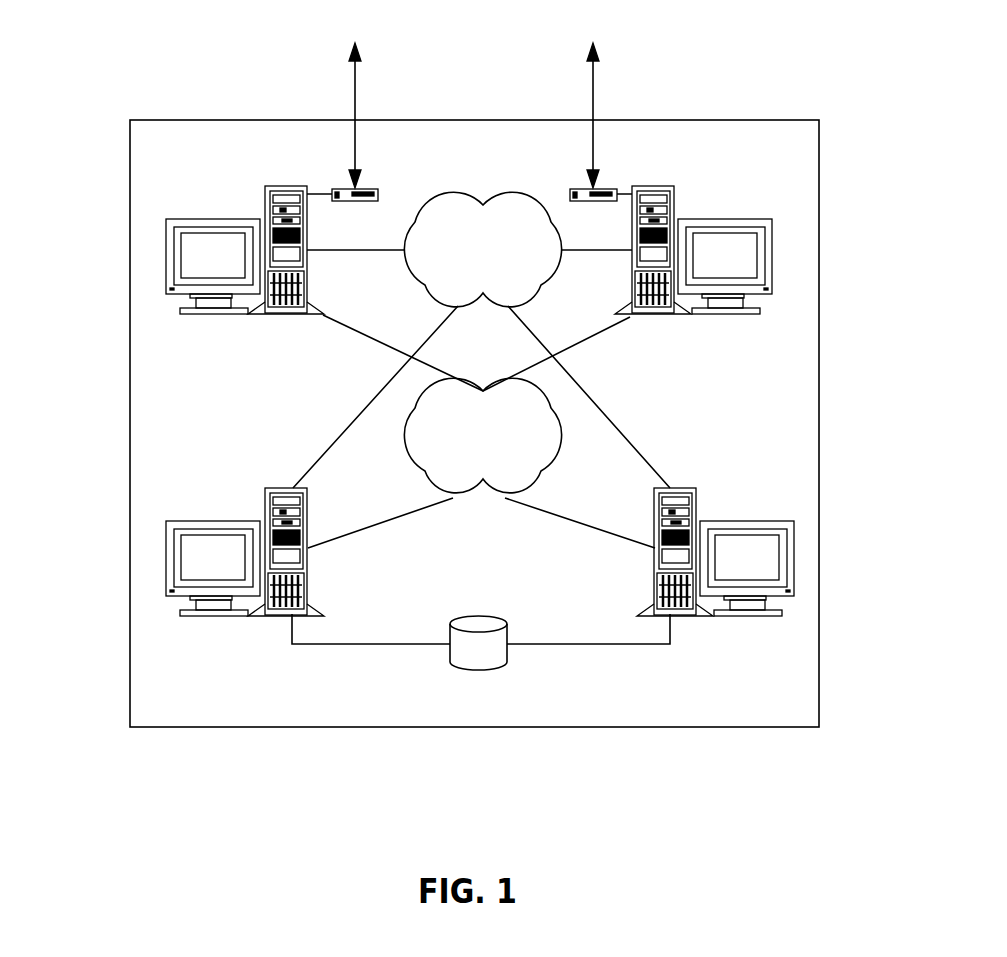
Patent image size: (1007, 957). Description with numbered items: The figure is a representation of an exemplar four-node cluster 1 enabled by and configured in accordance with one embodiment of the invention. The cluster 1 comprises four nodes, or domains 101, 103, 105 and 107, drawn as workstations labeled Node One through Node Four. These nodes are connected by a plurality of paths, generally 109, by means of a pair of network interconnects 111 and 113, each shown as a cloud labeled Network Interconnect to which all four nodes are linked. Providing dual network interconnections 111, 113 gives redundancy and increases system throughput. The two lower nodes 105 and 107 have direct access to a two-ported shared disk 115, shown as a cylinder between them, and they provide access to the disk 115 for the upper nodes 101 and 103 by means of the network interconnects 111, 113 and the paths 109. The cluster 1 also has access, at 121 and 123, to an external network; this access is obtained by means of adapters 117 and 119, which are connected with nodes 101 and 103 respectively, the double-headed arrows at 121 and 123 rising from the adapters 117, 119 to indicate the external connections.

The cluster 1 is at (195, 755).
The node 101 is at (167, 220).
The node 103 is at (773, 220).
The node 105 is at (167, 521).
The node 107 is at (795, 521).
The paths 109 is at (321, 323).
The network interconnect 111 is at (458, 193).
The network interconnect 113 is at (562, 438).
The two-ported shared disk 115 is at (480, 670).
The adapter 117 is at (348, 189).
The adapter 119 is at (602, 187).
The external network access 121 is at (355, 72).
The external network access 123 is at (593, 72).